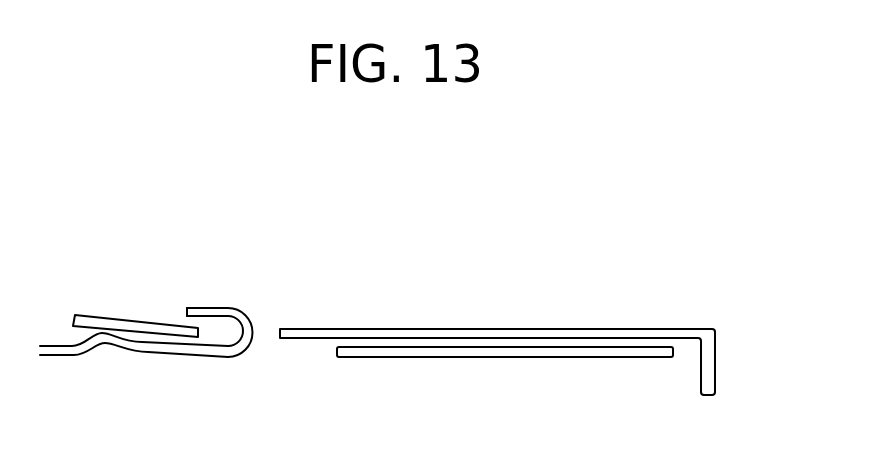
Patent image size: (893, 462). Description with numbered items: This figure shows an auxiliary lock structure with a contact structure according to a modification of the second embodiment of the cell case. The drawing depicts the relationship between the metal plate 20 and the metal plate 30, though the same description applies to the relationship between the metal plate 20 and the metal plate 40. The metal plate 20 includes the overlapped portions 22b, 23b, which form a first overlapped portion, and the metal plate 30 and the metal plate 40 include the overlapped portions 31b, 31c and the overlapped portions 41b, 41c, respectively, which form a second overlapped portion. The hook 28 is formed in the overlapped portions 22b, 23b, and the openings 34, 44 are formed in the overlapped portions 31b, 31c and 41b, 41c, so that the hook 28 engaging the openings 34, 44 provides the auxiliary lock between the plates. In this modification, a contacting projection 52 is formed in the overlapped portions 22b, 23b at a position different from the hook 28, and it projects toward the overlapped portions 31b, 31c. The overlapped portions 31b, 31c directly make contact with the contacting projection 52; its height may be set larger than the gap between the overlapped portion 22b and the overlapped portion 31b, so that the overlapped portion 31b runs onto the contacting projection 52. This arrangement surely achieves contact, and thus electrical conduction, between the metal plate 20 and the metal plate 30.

The metal plate 20 is at (635, 367).
The overlapped portion 22b is at (505, 392).
The overlapped portion 23b is at (510, 358).
The hook 28 is at (204, 308).
The metal plate 30 is at (522, 297).
The metal plate 40 is at (667, 312).
The overlapped portion 31b is at (497, 332).
The overlapped portion 31c is at (497, 332).
The overlapped portion 41b is at (497, 332).
The overlapped portion 41c is at (460, 308).
The opening 34 is at (491, 297).
The opening 44 is at (267, 333).
The contacting projection 52 is at (102, 346).